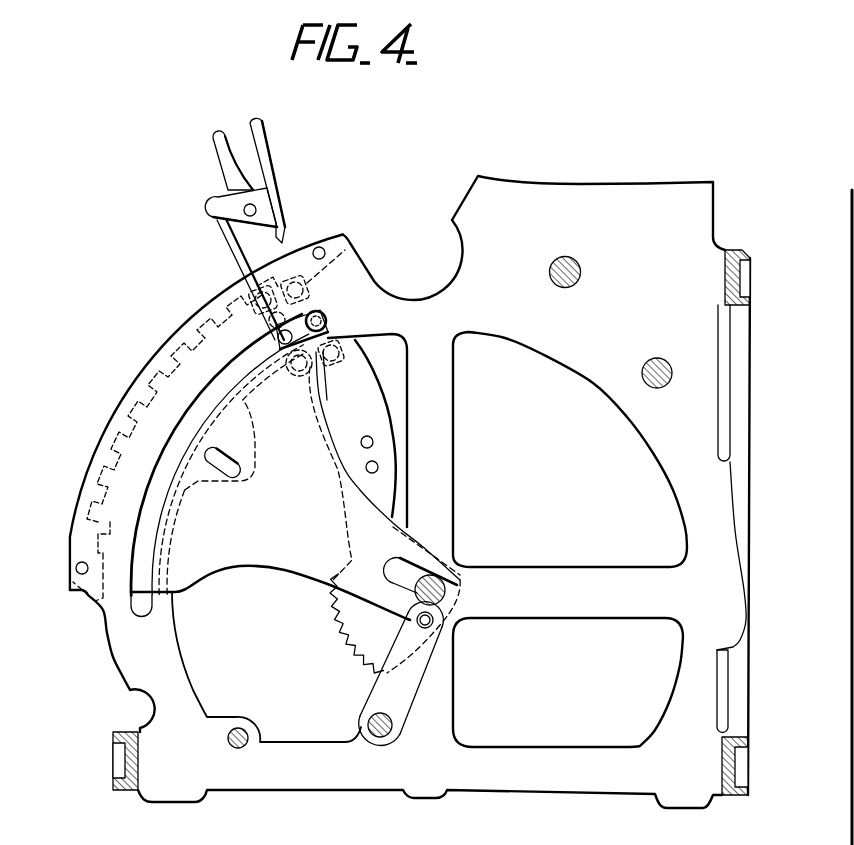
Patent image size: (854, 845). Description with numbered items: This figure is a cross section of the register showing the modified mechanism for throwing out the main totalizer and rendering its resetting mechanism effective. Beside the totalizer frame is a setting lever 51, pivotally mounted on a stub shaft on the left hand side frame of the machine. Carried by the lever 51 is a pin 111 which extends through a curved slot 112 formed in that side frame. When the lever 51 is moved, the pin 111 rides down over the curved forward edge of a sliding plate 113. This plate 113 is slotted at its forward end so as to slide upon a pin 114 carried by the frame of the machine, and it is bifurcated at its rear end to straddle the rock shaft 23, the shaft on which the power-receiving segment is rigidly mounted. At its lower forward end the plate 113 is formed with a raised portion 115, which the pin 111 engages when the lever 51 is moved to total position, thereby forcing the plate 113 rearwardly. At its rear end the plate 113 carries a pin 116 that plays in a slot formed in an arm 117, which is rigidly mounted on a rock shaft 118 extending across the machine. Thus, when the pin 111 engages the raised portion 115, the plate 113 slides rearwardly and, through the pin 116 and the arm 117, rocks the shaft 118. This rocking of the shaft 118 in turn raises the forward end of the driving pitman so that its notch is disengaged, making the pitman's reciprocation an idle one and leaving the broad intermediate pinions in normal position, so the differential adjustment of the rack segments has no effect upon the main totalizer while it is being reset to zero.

The setting lever 51 is at (223, 163).
The pin 111 is at (323, 315).
The curved slot 112 is at (211, 381).
The sliding plate 113 is at (193, 440).
The pin 114 is at (237, 470).
The raised portion 115 is at (142, 553).
The rock shaft 23 is at (445, 592).
The pin 116 is at (430, 622).
The arm 117 is at (413, 682).
The rock shaft 118 is at (393, 730).